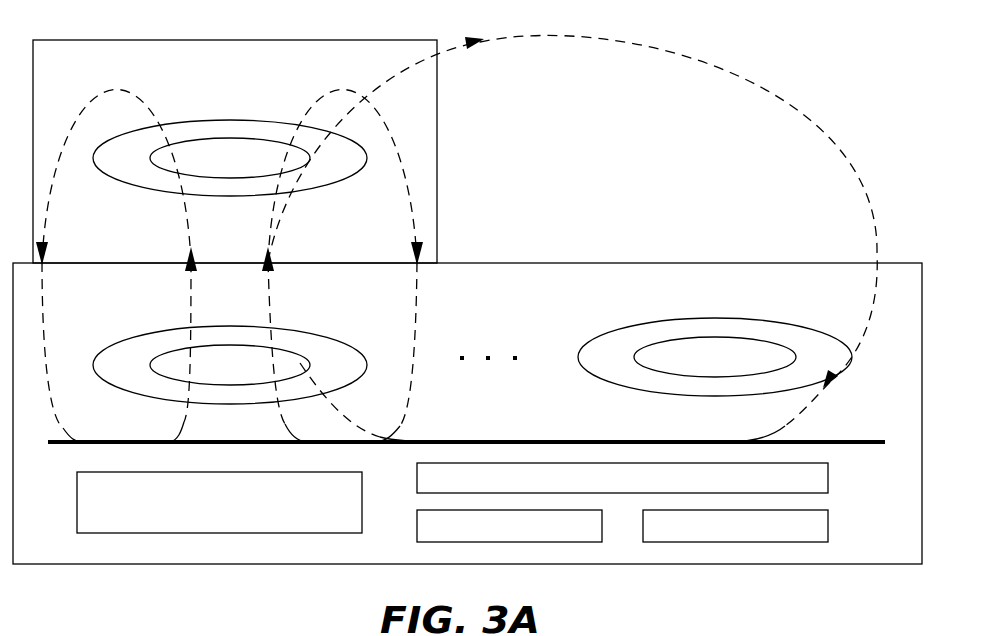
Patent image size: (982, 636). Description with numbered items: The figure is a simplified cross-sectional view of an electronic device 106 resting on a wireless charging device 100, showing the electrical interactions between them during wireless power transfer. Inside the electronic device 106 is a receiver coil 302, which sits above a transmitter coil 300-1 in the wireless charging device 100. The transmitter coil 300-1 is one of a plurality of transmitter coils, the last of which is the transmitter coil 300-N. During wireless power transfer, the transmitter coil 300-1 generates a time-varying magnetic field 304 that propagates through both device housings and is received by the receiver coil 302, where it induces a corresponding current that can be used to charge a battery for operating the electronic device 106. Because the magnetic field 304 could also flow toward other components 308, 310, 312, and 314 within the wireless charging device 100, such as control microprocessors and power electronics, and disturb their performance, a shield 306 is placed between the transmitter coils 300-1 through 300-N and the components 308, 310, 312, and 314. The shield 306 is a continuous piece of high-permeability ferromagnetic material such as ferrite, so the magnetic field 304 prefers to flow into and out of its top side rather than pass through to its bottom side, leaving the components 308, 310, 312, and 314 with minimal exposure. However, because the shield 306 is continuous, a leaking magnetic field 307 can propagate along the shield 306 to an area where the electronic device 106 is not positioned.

The wireless charging device 100 is at (815, 564).
The electronic device 106 is at (190, 40).
The receiver coil 302 is at (290, 192).
The transmitter coil 300-1 is at (327, 338).
The transmitter coil 300-N is at (822, 316).
The time-varying magnetic field 304 is at (50, 366).
The leaking magnetic field 307 is at (690, 47).
The shield 306 is at (866, 456).
The component 308 is at (202, 510).
The component 310 is at (604, 488).
The component 312 is at (489, 536).
The component 314 is at (719, 536).